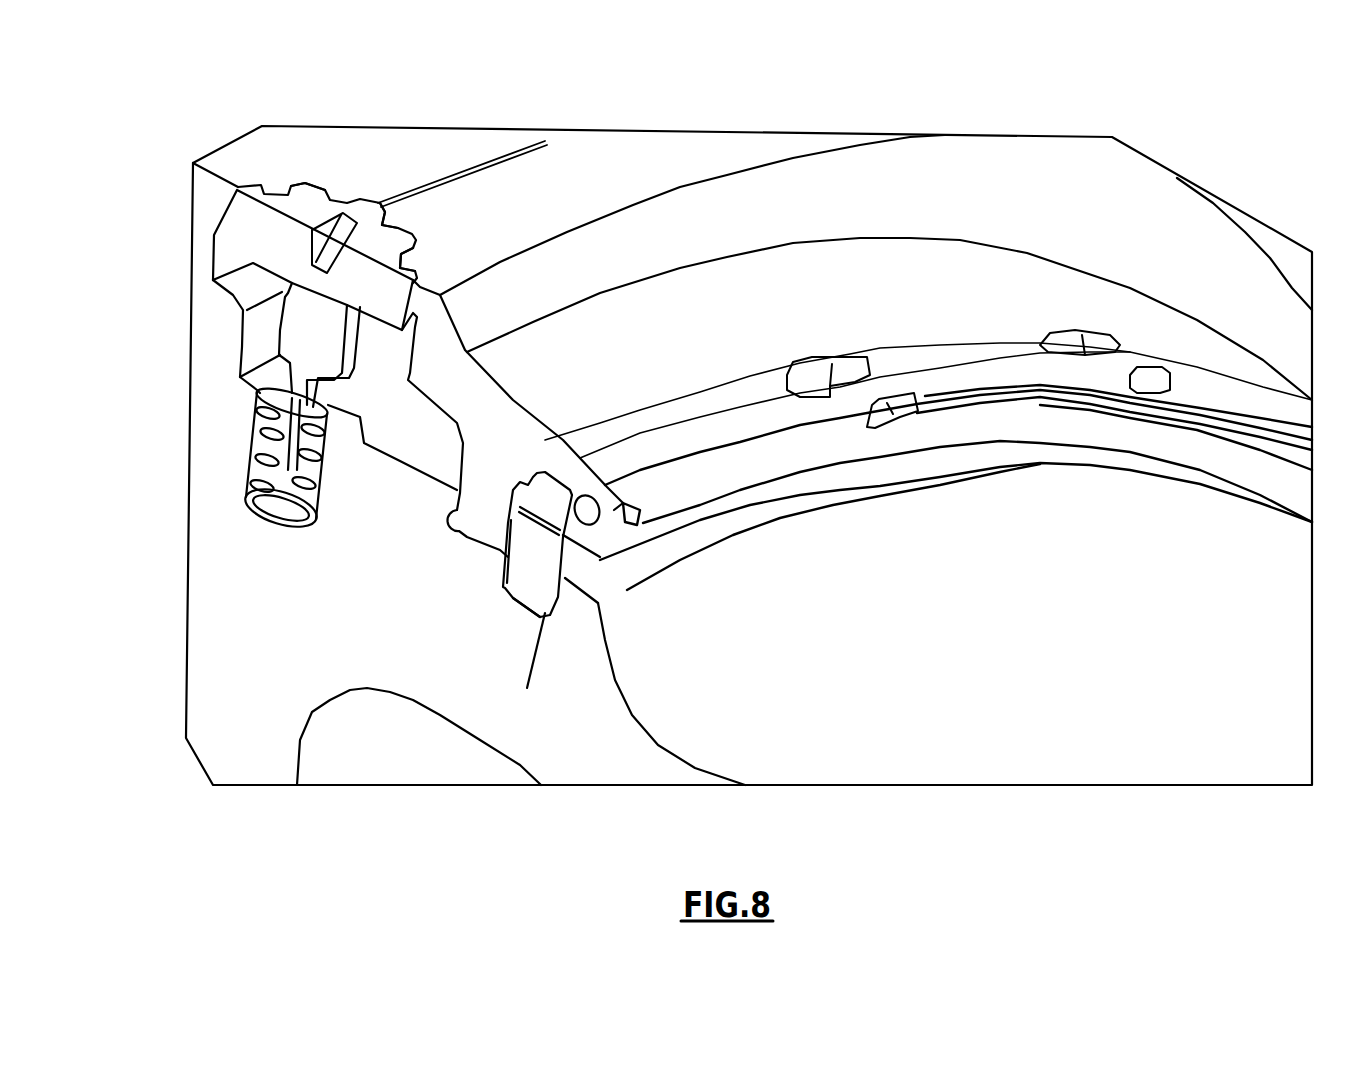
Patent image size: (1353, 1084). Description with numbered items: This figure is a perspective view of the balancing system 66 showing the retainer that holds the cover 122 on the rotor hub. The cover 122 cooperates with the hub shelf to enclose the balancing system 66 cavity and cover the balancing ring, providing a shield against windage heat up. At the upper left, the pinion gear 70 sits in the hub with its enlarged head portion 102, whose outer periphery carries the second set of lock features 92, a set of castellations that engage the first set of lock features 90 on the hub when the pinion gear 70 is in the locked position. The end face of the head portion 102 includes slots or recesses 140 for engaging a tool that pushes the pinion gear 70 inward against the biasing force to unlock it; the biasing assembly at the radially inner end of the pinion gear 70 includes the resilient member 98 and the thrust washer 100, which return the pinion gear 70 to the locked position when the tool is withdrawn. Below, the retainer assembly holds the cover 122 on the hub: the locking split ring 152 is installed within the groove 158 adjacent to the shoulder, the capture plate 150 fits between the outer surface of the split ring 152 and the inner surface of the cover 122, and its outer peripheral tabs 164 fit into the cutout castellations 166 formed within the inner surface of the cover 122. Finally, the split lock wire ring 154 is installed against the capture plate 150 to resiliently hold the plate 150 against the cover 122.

The balancing system 66 is at (166, 422).
The pinion gear 70 is at (369, 198).
The first set of lock features 90 is at (303, 180).
The second set of lock features 92 is at (416, 242).
The resilient member 98 is at (258, 464).
The thrust washer 100 is at (274, 513).
The head portion 102 is at (388, 225).
The cover 122 is at (580, 258).
The slots or recesses 140 is at (335, 220).
The capture plate 150 is at (553, 500).
The locking split ring 152 is at (523, 590).
The split lock wire ring 154 is at (596, 522).
The groove 158 is at (526, 686).
The protrusions or tabs 164 is at (1083, 337).
The recesses or cutout castellations 166 is at (1140, 382).